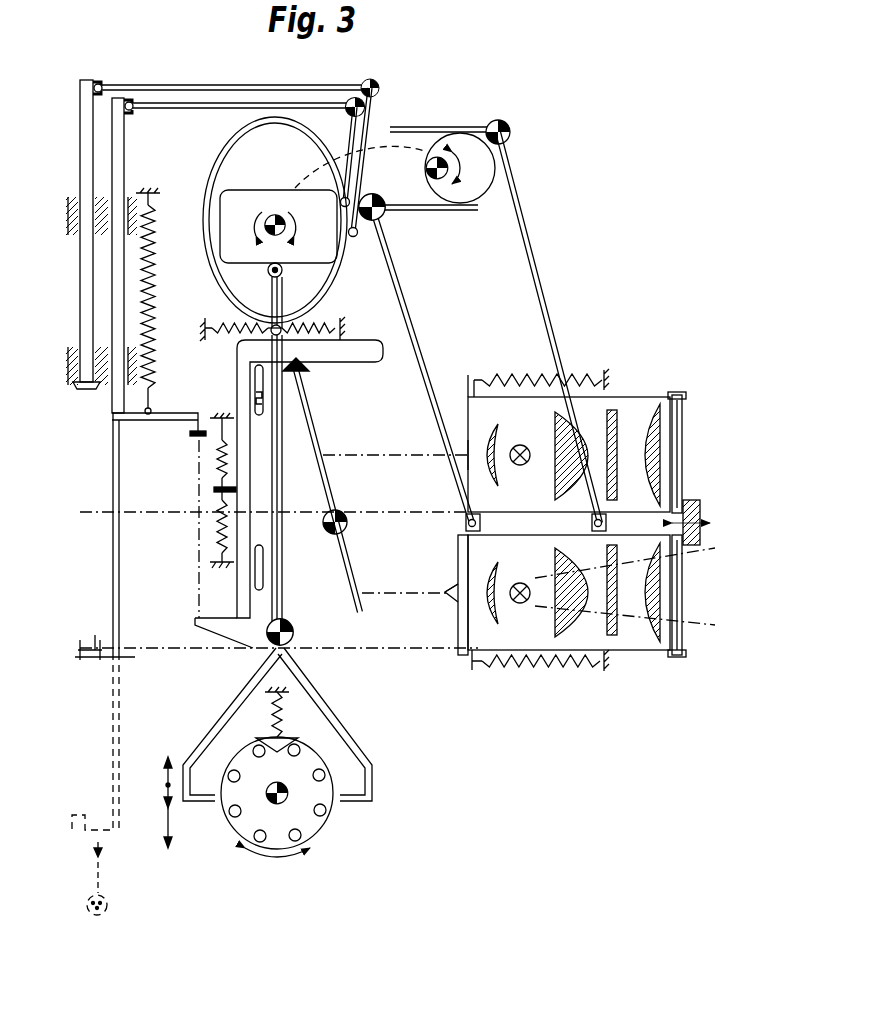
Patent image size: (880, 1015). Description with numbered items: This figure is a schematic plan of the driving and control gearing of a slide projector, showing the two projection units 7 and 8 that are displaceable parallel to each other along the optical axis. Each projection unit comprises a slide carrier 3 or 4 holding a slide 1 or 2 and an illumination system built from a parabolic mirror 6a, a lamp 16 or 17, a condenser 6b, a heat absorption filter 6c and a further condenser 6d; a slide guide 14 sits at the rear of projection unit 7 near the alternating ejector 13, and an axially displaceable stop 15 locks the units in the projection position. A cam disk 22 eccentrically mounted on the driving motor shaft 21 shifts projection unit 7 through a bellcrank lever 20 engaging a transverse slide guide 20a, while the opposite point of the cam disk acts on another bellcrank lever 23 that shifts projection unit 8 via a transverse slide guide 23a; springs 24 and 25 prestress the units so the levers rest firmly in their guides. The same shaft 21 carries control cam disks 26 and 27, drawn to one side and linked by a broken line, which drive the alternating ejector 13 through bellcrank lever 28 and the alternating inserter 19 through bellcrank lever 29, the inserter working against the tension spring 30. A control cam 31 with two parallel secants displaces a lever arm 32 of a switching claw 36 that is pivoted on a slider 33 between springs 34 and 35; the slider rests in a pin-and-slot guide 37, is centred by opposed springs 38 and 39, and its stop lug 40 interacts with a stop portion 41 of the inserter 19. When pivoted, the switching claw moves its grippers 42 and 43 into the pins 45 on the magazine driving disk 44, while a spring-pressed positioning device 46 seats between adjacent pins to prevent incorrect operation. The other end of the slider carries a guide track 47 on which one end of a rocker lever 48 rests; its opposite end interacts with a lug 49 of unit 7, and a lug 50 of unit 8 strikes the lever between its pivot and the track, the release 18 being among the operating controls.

The slide 1 is at (676, 603).
The slide 2 is at (682, 447).
The first slide carrier 3 is at (678, 660).
The second slide carrier 4 is at (677, 396).
The parabolic mirror 6a is at (492, 440).
The condenser 6b is at (555, 480).
The heat absorption filter 6c is at (615, 436).
The condenser 6d is at (652, 490).
The projection unit 7 is at (651, 700).
The projection unit 8 is at (646, 390).
The alternating ejector 13 is at (88, 392).
The slide guide 14 is at (458, 660).
The stop 15 is at (690, 500).
The lamp 16 is at (524, 444).
The lamp 17 is at (522, 582).
The release 18 is at (110, 908).
The alternating inserter 19 is at (130, 672).
The bellcrank lever 20 is at (409, 283).
The transverse slide guide 20a is at (482, 524).
The driving motor shaft 21 is at (278, 238).
The cam disk 22 is at (450, 161).
The bellcrank lever 23 is at (545, 262).
The transverse slide guide 23a is at (607, 524).
The spring 24 is at (522, 378).
The spring 25 is at (550, 670).
The control cam disk 26 is at (206, 244).
The control cam disk 27 is at (260, 297).
The bellcrank lever 28 is at (240, 85).
The bellcrank lever 29 is at (326, 103).
The spring 30 is at (156, 338).
The control cam 31 is at (246, 226).
The lever arm 32 is at (284, 292).
The slider 33 is at (240, 415).
The spring 34 is at (341, 318).
The spring 35 is at (232, 340).
The switching claw 36 is at (284, 604).
The pin-and-slot guide 37 is at (258, 404).
The spring 38 is at (222, 532).
The spring 39 is at (222, 470).
The stop lug 40 is at (195, 625).
The stop portion 41 is at (190, 417).
The gripper 42 is at (205, 801).
The gripper 43 is at (350, 801).
The driving disk 44 is at (330, 748).
The pins 45 is at (258, 738).
The positioning device 46 is at (283, 715).
The guide track 47 is at (362, 363).
The rocker lever 48 is at (326, 420).
The lug 49 is at (452, 598).
The lug 50 is at (458, 455).